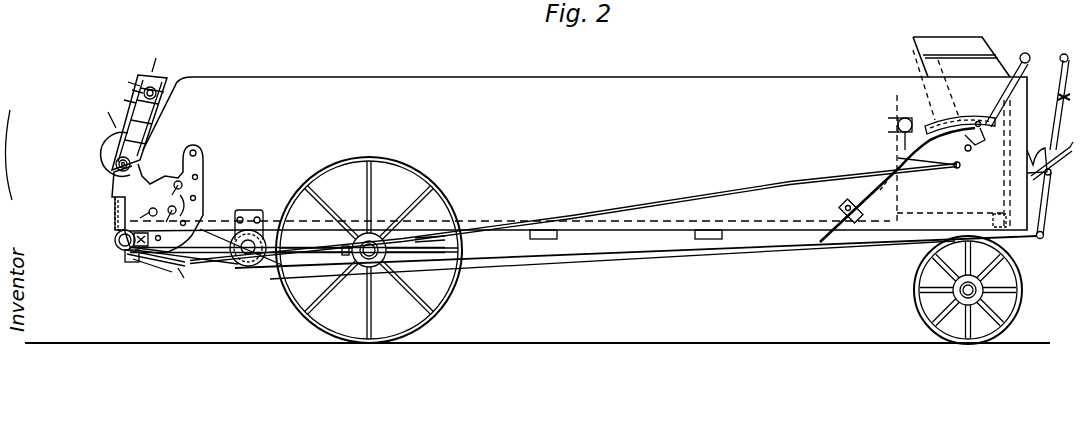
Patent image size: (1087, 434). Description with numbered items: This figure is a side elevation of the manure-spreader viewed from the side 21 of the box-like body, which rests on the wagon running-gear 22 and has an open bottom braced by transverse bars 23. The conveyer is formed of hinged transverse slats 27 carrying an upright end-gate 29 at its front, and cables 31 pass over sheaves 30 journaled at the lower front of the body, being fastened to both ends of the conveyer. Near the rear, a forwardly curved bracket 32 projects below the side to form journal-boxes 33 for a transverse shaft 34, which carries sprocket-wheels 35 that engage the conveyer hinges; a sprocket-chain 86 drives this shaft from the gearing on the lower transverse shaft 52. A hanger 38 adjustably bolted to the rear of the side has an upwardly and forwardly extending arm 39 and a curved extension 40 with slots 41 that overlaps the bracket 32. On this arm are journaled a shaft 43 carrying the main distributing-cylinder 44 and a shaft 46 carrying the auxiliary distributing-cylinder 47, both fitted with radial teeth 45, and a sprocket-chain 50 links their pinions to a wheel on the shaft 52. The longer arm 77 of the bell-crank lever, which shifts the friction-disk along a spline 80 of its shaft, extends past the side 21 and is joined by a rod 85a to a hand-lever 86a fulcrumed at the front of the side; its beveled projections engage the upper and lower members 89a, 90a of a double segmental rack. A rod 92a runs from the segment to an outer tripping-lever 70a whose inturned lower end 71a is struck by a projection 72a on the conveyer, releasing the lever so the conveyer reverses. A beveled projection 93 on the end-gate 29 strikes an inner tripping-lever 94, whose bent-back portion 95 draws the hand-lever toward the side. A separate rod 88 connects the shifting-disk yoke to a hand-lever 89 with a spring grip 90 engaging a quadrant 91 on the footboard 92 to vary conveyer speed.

The side of the bed or body 21 is at (578, 133).
The running-gear 22 is at (455, 300).
The transverse bars 23 is at (545, 230).
The slats 27 is at (178, 270).
The end-gate 29 is at (888, 118).
The sheaves or pulleys 30 is at (1025, 238).
The cables 31 is at (548, 258).
The bracket 32 is at (204, 165).
The journal-boxes 33 is at (128, 262).
The transverse shaft 34 is at (120, 248).
The sprocket-wheel 35 is at (372, 256).
The hanger 38 is at (112, 200).
The arm 39 is at (158, 124).
The extension 40 is at (186, 212).
The slots 41 is at (148, 213).
The shaft 43 is at (116, 168).
The main distributing-cylinder 44 is at (106, 152).
The radial spikes or teeth 45 is at (160, 66).
The shaft 46 is at (124, 100).
The auxiliary distributing-cylinder 47 is at (130, 82).
The sprocket-chain 50 is at (238, 252).
The transverse shaft 52 is at (250, 258).
The outer tripping-lever 70a is at (895, 192).
The inturned and rounded lower end 71a is at (836, 243).
The projection 72a is at (134, 264).
The longer arm of the bell-crank lever 77 is at (455, 213).
The spline or feather 80 is at (497, 248).
The rod 85a is at (670, 207).
The sprocket-chain 86 is at (205, 266).
The hand-lever 86a is at (1000, 120).
The rod 88 is at (893, 242).
The hand-lever 89 is at (1055, 200).
The upper member of the double segmental rack 89a is at (938, 127).
The spring-actuated grip 90 is at (1058, 120).
The lower member of the double segmental rack 90a is at (891, 141).
The quadrant 91 is at (1038, 150).
The footboard 92 is at (1058, 152).
The rod 92a is at (898, 158).
The beveled projection 93 is at (896, 124).
The inner tripping-lever 94 is at (906, 118).
The bent-back outer portion 95 is at (965, 135).